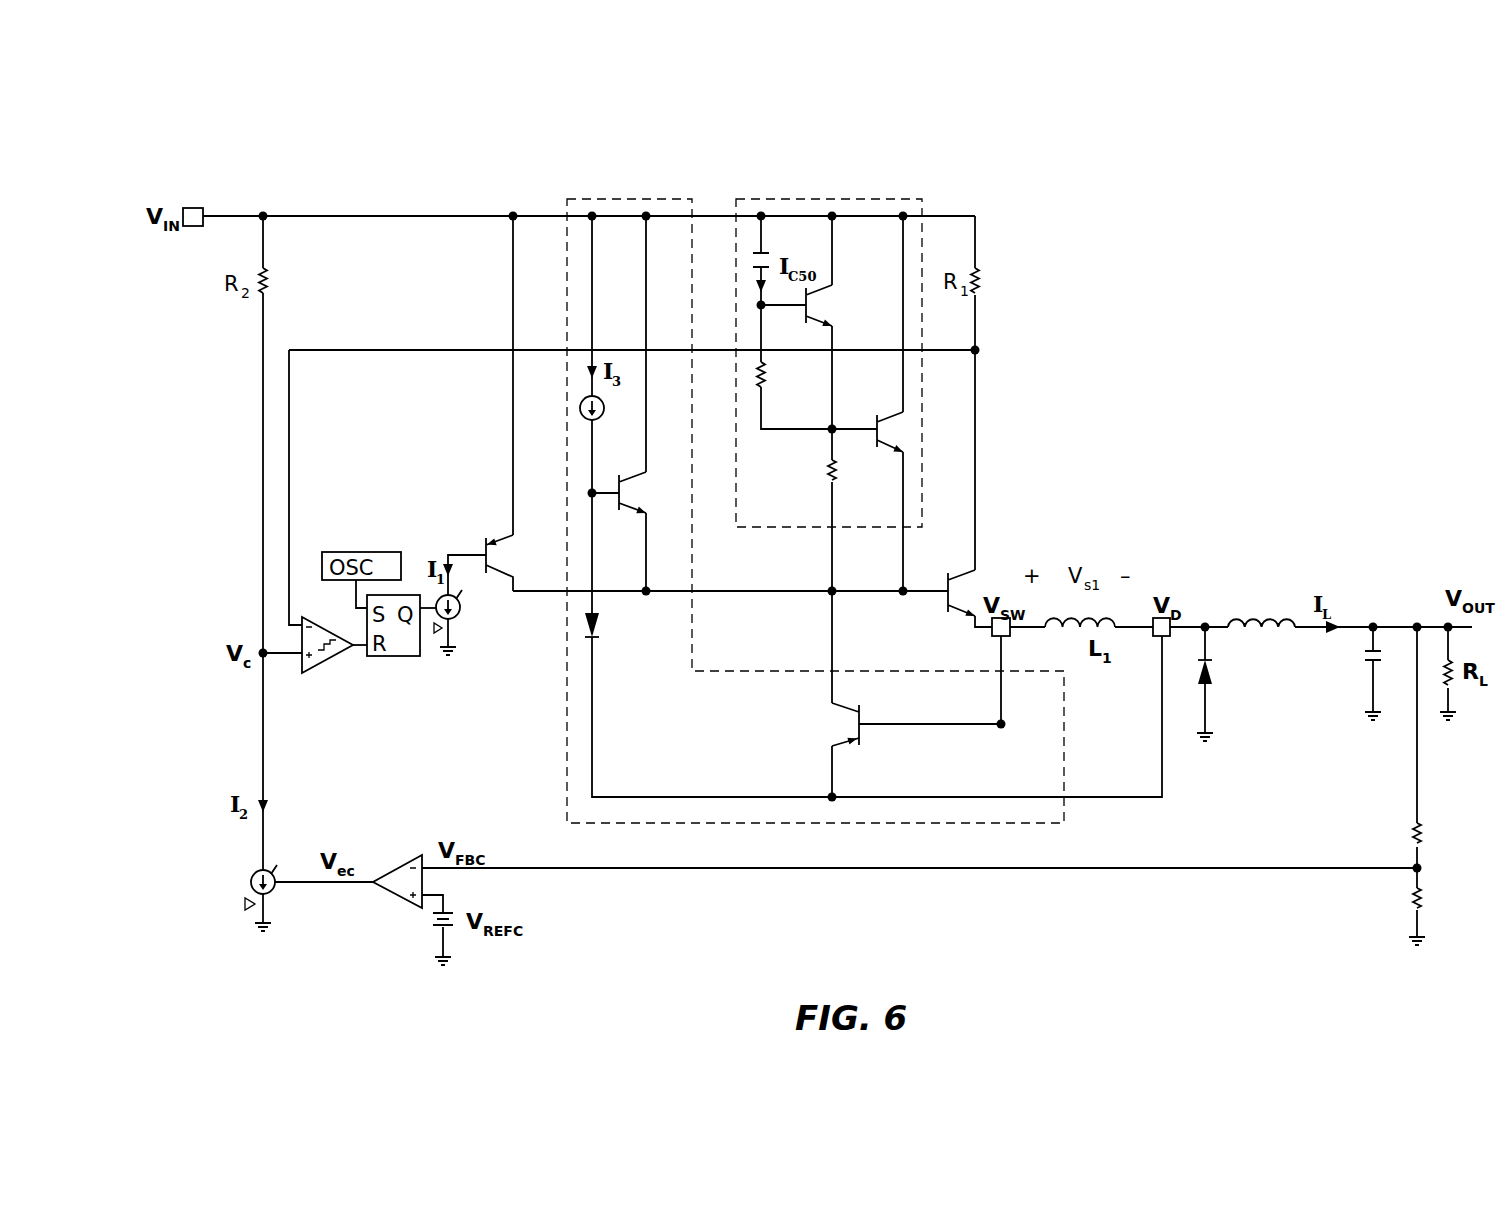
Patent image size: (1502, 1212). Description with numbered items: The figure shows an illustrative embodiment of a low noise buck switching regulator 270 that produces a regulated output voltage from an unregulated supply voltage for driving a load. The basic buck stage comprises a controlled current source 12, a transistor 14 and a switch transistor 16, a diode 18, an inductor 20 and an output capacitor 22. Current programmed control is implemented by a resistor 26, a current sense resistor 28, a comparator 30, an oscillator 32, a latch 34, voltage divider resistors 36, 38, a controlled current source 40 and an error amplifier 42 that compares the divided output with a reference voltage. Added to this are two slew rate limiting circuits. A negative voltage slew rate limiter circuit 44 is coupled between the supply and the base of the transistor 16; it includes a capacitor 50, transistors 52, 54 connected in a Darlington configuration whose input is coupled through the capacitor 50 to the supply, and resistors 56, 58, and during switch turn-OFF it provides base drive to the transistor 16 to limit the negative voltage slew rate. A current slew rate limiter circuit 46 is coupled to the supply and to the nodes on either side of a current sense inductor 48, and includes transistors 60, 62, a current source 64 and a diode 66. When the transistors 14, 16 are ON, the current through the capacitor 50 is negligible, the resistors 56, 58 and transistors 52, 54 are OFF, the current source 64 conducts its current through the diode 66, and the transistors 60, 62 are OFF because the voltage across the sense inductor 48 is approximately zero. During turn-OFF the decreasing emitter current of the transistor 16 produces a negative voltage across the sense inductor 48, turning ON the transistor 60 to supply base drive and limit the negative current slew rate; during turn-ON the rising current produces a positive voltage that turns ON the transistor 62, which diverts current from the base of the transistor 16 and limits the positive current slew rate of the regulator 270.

The controlled current source 12 is at (461, 614).
The transistor 14 is at (502, 540).
The transistor 16 is at (957, 609).
The diode 18 is at (1213, 672).
The inductor 20 is at (1262, 618).
The capacitor 22 is at (1365, 654).
The resistor 26 is at (269, 278).
The current sense resistor 28 is at (981, 280).
The comparator 30 is at (330, 660).
The oscillator 32 is at (362, 552).
The latch 34 is at (408, 656).
The voltage divider resistor 36 is at (1424, 838).
The voltage divider resistor 38 is at (1424, 898).
The controlled current source 40 is at (250, 874).
The error amplifier 42 is at (396, 864).
The negative voltage slew rate limiter circuit 44 is at (918, 199).
The positive and negative current slew rate limiter circuit 46 is at (1064, 823).
The current sense inductor 48 is at (1086, 620).
The capacitor 50 is at (768, 270).
The transistor 52 is at (818, 298).
The transistor 54 is at (894, 412).
The resistor 56 is at (768, 378).
The resistor 58 is at (828, 470).
The transistor 60 is at (630, 490).
The transistor 62 is at (844, 748).
The current source 64 is at (602, 416).
The diode 66 is at (598, 624).
The regulator 270 is at (1165, 226).